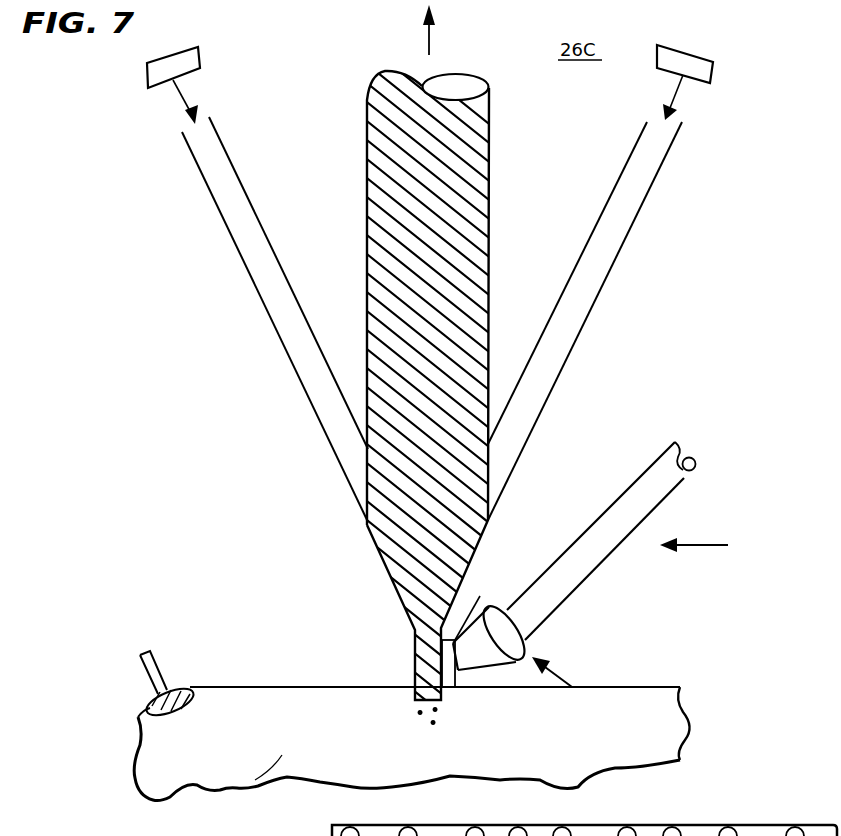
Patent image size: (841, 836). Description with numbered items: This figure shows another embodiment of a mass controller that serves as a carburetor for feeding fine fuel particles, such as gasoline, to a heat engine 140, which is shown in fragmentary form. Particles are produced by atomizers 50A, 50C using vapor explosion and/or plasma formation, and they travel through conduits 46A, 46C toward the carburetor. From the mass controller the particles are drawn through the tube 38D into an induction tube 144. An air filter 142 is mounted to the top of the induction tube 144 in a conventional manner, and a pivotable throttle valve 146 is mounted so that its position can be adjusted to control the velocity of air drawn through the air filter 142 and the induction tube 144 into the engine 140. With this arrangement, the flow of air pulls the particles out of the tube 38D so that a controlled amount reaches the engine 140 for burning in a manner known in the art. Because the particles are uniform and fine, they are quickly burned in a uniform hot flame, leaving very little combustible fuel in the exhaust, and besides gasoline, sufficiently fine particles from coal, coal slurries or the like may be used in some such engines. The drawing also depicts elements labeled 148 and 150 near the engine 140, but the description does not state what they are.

The tube 38D is at (417, 663).
The conduit 46A is at (270, 318).
The conduit 46C is at (576, 318).
The atomizer 50A is at (200, 60).
The atomizer 50C is at (710, 72).
The heat engine 140 is at (252, 787).
The air filter 142 is at (470, 59).
The induction tube 144 is at (614, 504).
The pivotable throttle valve 146 is at (470, 690).
The filler material 148 is at (480, 596).
The backing strip 150 is at (542, 822).